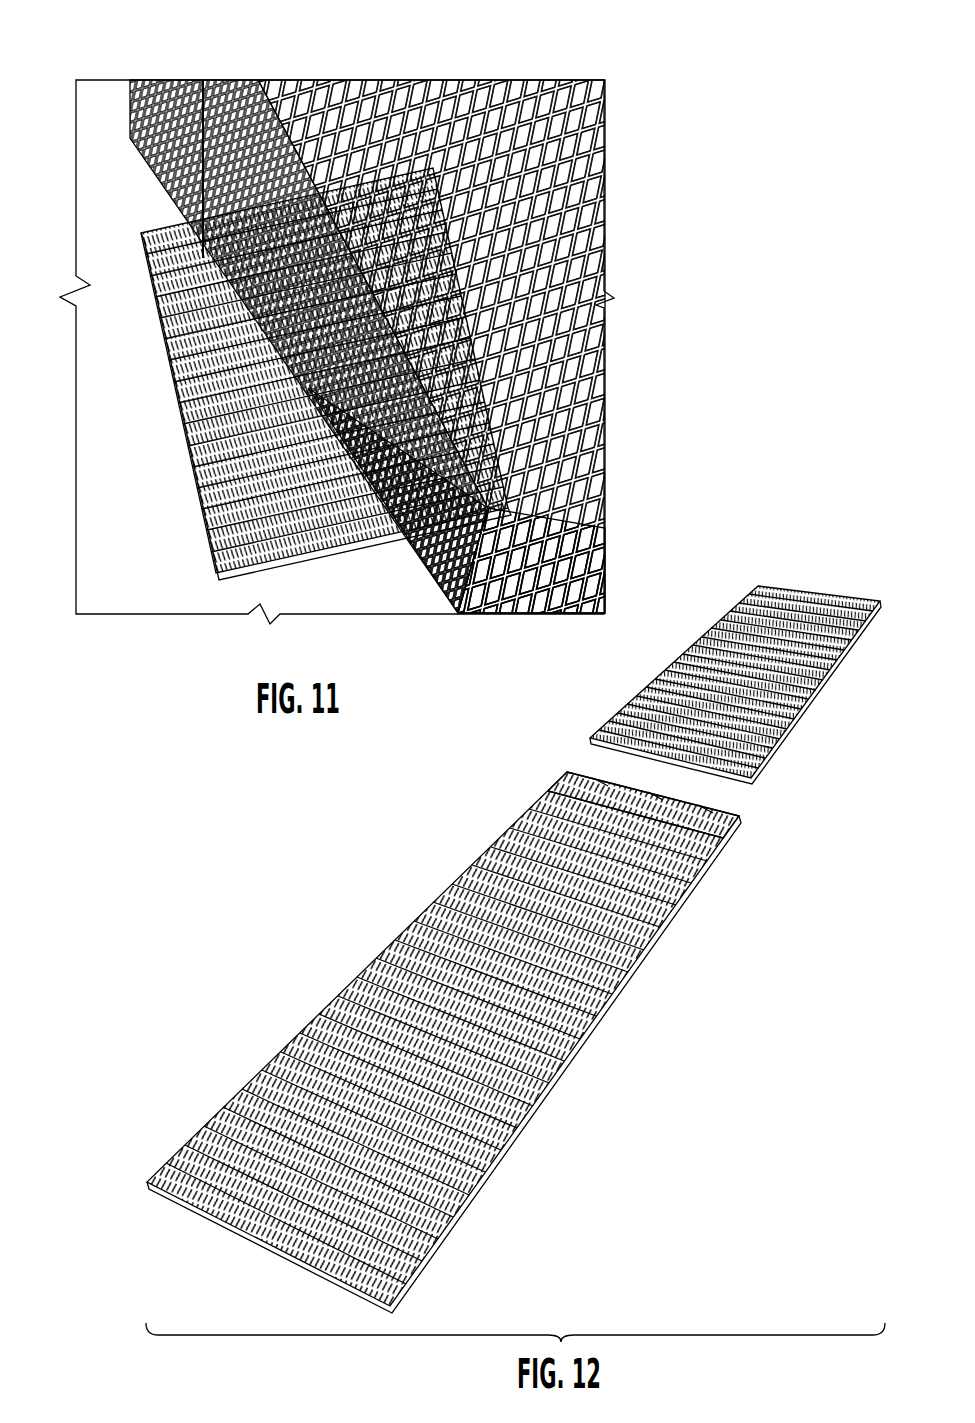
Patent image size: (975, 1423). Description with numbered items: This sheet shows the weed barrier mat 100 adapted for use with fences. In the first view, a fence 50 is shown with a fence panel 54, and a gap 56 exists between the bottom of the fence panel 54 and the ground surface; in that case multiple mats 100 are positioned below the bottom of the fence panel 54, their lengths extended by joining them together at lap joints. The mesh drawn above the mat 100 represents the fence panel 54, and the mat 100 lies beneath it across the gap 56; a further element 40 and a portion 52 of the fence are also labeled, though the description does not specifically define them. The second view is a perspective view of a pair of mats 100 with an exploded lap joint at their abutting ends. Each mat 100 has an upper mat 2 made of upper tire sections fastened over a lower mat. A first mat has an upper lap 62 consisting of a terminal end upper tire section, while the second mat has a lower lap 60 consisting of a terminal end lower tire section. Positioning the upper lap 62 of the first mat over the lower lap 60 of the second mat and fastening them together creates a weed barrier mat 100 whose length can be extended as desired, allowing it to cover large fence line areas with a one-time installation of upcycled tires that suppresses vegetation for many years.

In FIG. 12, the upper mat 2 is at (815, 586).
In FIG. 11, the mesh layer 40 is at (190, 72).
In FIG. 11, the fence 50 is at (108, 180).
In FIG. 11, the mesh first portion 52 is at (575, 432).
In FIG. 11, the fence panel 54 is at (447, 598).
In FIG. 11, the gap 56 is at (406, 570).
In FIG. 12, the lower lap 60 is at (717, 790).
In FIG. 12, the upper lap 62 is at (613, 717).
In FIG. 11, the mat 100 is at (225, 578).
In FIG. 12, the mat 100 is at (862, 668).